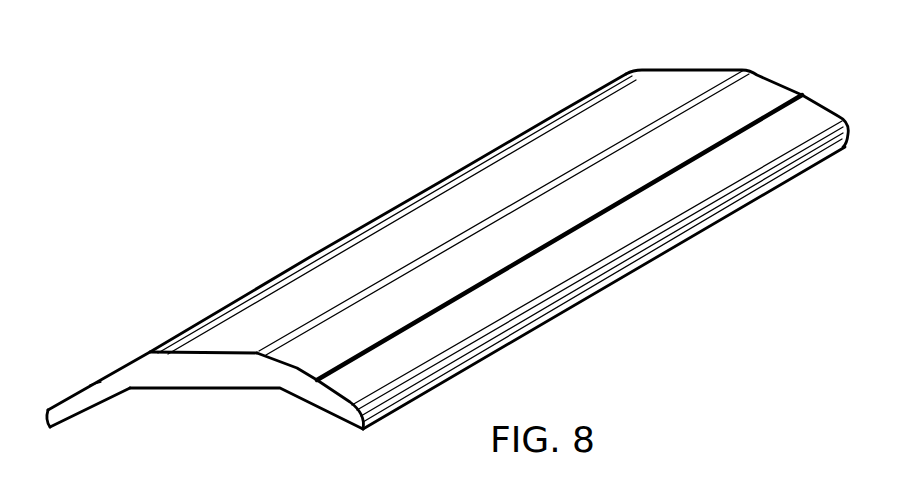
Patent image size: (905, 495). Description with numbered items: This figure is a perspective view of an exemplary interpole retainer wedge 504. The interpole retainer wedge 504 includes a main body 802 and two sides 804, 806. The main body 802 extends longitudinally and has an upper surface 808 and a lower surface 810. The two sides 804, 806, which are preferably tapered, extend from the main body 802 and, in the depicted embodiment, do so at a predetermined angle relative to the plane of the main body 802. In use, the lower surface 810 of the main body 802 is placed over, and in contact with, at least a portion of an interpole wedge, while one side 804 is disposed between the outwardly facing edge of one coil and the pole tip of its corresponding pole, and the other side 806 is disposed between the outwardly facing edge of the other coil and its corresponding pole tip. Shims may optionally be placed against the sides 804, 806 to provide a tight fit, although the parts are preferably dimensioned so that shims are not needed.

The interpole retainer wedge 504 is at (309, 156).
The main body 802 is at (463, 199).
The side 804 is at (852, 115).
The side 806 is at (143, 345).
The upper surface 808 is at (321, 314).
The lower surface 810 is at (210, 390).